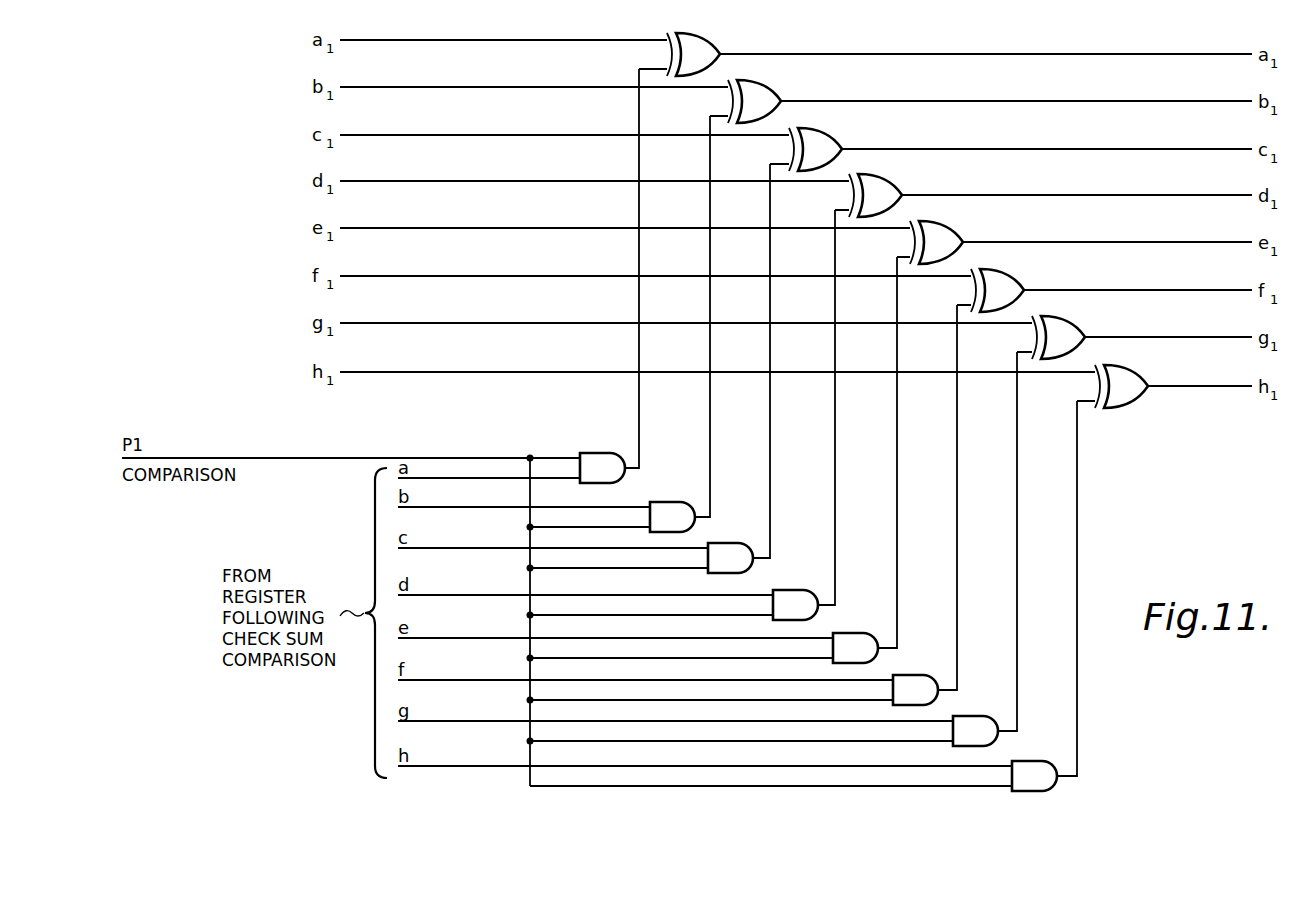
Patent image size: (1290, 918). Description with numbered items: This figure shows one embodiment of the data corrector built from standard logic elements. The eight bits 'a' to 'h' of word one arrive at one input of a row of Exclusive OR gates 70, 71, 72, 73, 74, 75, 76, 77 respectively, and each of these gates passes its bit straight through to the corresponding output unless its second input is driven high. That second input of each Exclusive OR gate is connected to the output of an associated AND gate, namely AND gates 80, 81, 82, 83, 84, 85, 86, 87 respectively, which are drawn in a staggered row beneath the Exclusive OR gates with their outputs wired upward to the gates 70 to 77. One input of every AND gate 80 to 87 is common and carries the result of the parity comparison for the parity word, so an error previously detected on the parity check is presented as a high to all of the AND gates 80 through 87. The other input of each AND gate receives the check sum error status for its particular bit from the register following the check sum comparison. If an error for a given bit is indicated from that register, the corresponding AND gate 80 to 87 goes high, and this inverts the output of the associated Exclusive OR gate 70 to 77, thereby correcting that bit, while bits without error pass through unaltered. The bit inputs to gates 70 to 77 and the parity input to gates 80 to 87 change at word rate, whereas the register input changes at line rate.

The Exclusive OR gate 70 is at (706, 50).
The Exclusive OR gate 71 is at (767, 97).
The Exclusive OR gate 72 is at (828, 145).
The Exclusive OR gate 73 is at (888, 191).
The Exclusive OR gate 74 is at (949, 238).
The Exclusive OR gate 75 is at (1010, 286).
The Exclusive OR gate 76 is at (1071, 333).
The Exclusive OR gate 77 is at (1134, 382).
The AND gate 80 is at (607, 462).
The AND gate 81 is at (677, 511).
The AND gate 82 is at (735, 552).
The AND gate 83 is at (800, 599).
The AND gate 84 is at (860, 642).
The AND gate 85 is at (920, 684).
The AND gate 86 is at (980, 725).
The AND gate 87 is at (1039, 770).